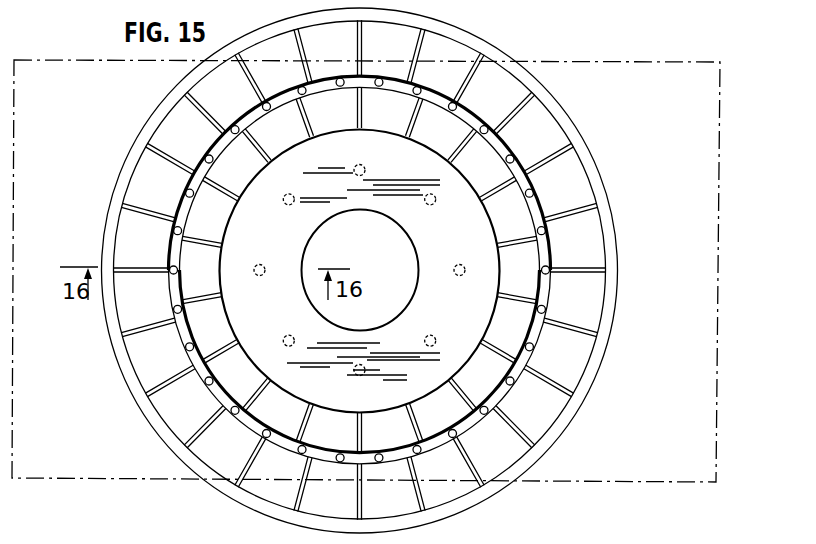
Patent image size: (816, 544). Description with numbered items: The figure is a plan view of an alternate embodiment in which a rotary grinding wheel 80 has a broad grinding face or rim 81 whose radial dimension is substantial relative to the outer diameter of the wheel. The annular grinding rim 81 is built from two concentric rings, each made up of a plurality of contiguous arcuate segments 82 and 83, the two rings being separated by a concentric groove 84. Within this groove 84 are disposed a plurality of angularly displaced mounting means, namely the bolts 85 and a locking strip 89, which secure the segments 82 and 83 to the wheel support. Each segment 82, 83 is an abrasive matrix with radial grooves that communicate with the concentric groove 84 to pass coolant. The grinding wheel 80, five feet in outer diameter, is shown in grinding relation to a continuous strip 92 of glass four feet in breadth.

The rotary grinding wheel 80 is at (458, 241).
The broad grinding face or rim 81 is at (546, 124).
The arcuate segments 82 is at (394, 53).
The arcuate segments 83 is at (394, 121).
The concentric groove 84 is at (538, 203).
The bolts 85 is at (268, 103).
The locking strip 89 is at (243, 119).
The continuous strip of glass 92 is at (617, 481).